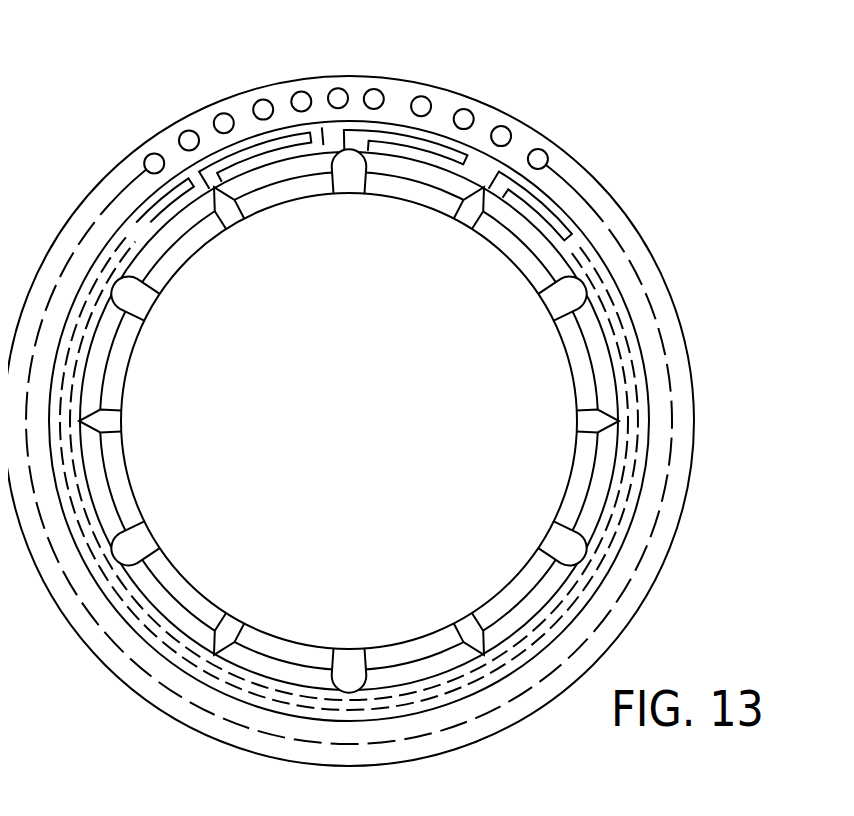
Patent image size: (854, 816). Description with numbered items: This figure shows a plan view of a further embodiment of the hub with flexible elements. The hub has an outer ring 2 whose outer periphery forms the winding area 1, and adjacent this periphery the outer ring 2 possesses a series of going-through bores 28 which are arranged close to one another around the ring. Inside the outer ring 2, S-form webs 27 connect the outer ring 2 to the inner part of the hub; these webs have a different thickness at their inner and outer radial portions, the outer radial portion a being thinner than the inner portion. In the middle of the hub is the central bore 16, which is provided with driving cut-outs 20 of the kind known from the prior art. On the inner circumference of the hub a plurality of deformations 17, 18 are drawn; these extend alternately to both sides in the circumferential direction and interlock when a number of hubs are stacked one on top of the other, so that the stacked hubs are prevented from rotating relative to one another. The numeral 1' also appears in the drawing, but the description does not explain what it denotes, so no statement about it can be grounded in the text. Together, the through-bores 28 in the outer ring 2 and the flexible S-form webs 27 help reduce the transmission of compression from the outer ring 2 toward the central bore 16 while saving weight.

The winding area 1 is at (351, 421).
The projection of inner ring 1' is at (239, 234).
The outer ring 2 is at (92, 180).
The central bore 16 is at (517, 472).
The deformations 17 is at (556, 508).
The deformations 18 is at (371, 650).
The driving cut-outs 20 is at (147, 288).
The S-form webs 27 is at (394, 132).
The going-through bores 28 is at (210, 106).
The outer radial portion a is at (578, 232).